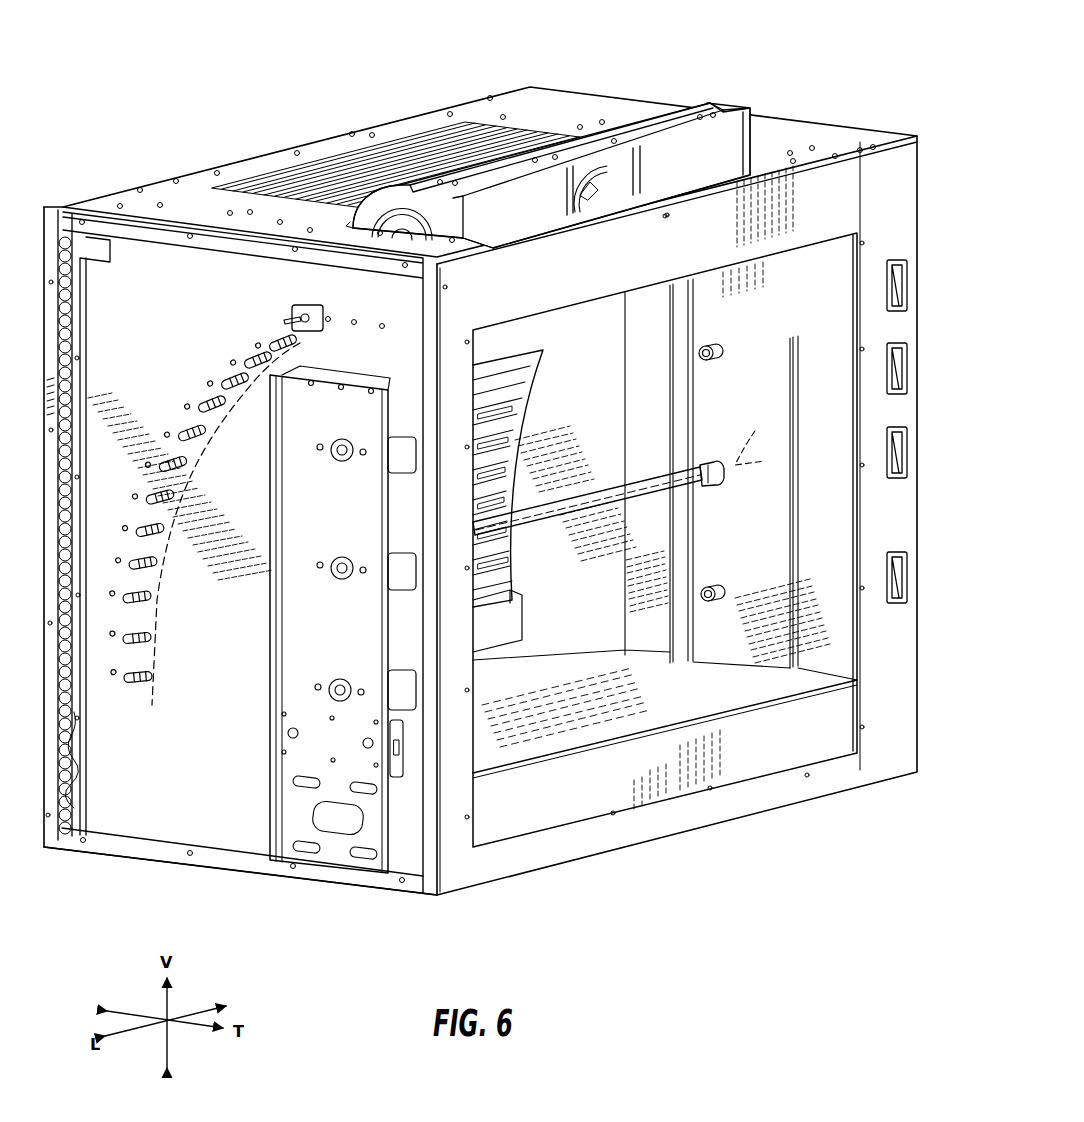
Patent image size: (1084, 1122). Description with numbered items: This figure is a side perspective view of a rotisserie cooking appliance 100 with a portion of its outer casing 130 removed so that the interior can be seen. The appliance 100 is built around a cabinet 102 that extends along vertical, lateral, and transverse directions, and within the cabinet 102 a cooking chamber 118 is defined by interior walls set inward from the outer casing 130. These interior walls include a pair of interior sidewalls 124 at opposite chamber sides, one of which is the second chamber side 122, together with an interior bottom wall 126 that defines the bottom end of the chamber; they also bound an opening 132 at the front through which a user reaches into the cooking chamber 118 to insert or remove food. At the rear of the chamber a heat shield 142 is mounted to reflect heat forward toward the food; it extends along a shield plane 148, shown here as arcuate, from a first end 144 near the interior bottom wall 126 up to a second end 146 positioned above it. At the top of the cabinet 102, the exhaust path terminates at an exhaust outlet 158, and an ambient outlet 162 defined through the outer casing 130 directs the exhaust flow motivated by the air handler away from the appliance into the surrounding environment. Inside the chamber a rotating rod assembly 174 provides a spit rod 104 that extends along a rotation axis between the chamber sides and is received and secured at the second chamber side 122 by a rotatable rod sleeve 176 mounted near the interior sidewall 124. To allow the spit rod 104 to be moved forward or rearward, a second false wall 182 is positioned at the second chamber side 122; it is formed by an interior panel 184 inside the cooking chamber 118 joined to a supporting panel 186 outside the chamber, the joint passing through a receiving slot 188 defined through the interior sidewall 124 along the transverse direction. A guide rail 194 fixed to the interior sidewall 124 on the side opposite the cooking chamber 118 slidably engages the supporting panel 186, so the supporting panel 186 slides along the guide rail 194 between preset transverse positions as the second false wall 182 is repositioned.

The cooking appliance 100 is at (260, 48).
The cabinet 102 is at (53, 200).
The spit rod 104 is at (652, 495).
The cooking chamber 118 is at (590, 609).
The second chamber side 122 is at (822, 520).
The interior sidewall 124 is at (145, 290).
The interior bottom wall 126 is at (527, 745).
The outer casing 130 is at (540, 104).
The opening 132 is at (870, 632).
The heat shield 142 is at (512, 440).
The first end 144 is at (148, 725).
The second end 146 is at (312, 339).
The shield plane 148 is at (152, 698).
The exhaust outlet 158 is at (553, 153).
The ambient outlet 162 is at (620, 160).
The rotating rod assembly 174 is at (312, 870).
The rod sleeve 176 is at (710, 463).
The second false wall 182 is at (772, 392).
The interior panel 184 is at (777, 498).
The supporting panel 186 is at (288, 808).
The receiving slot 188 is at (415, 690).
The guide rail 194 is at (400, 415).